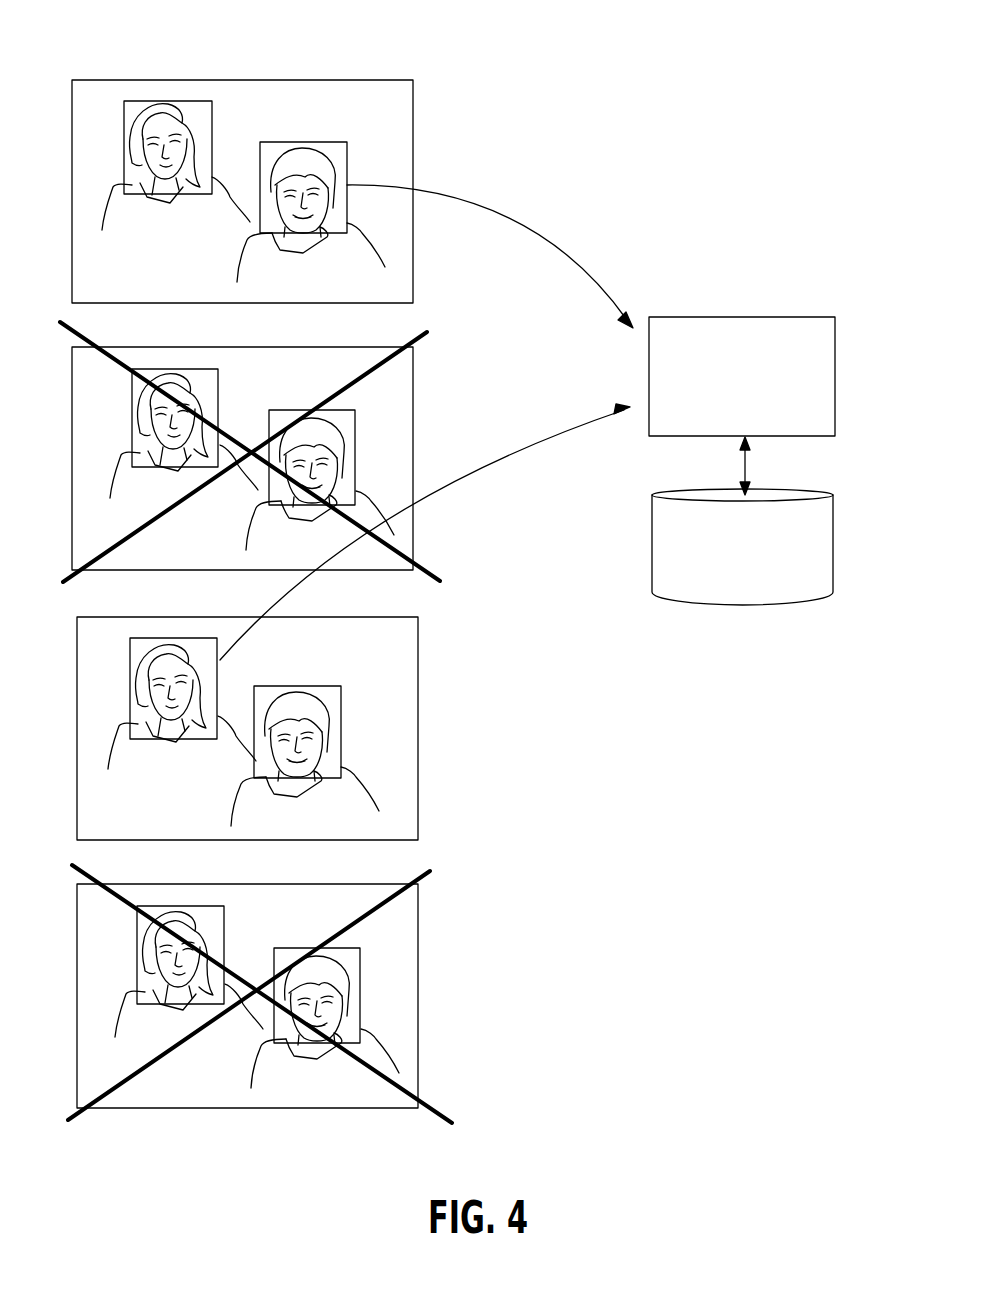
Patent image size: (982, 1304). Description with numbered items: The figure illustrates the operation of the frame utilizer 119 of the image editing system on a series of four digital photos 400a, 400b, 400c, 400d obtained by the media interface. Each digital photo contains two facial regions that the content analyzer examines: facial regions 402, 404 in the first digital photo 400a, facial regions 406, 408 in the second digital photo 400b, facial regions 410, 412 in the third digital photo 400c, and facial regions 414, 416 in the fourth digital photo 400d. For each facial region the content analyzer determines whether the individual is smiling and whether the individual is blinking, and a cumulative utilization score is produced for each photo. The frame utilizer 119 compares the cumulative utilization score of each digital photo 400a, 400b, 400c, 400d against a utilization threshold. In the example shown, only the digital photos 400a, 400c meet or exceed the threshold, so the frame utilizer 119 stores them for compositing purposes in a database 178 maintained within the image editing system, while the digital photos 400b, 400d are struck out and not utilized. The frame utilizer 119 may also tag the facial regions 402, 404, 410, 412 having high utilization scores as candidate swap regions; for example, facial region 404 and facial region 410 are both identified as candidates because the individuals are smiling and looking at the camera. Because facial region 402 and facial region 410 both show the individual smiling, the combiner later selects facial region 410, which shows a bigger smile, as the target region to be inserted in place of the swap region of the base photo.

The digital photo 400a is at (278, 176).
The digital photo 400b is at (272, 449).
The digital photo 400c is at (284, 712).
The digital photo 400d is at (280, 988).
The facial region 402 is at (140, 102).
The facial region 404 is at (298, 142).
The facial region 406 is at (167, 369).
The facial region 408 is at (327, 410).
The facial region 410 is at (157, 638).
The facial region 412 is at (310, 686).
The facial region 414 is at (172, 906).
The facial region 416 is at (328, 948).
The frame utilizer 119 is at (728, 401).
The database 178 is at (818, 558).